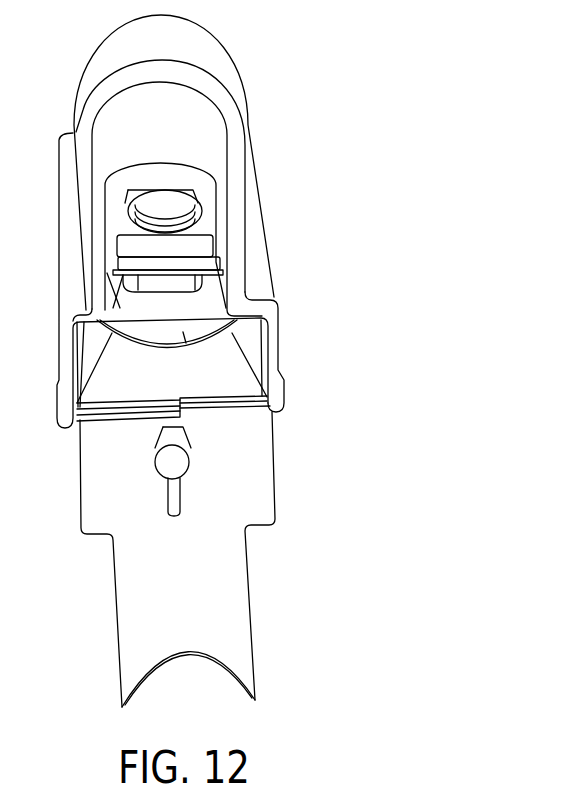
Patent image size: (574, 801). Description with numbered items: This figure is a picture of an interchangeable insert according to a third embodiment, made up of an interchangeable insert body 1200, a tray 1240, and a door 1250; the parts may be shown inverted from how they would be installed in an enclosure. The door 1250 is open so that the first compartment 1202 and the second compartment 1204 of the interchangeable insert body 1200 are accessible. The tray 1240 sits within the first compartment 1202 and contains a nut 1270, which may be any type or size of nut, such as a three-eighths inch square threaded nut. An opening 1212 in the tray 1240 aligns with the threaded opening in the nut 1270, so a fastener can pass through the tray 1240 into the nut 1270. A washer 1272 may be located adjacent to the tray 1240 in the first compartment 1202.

The interchangeable insert body 1200 is at (237, 123).
The second compartment 1204 is at (196, 135).
The opening 1212 is at (190, 197).
The tray 1240 is at (195, 247).
The nut 1270 is at (188, 281).
The washer 1272 is at (190, 346).
The first compartment 1202 is at (222, 380).
The door 1250 is at (218, 580).